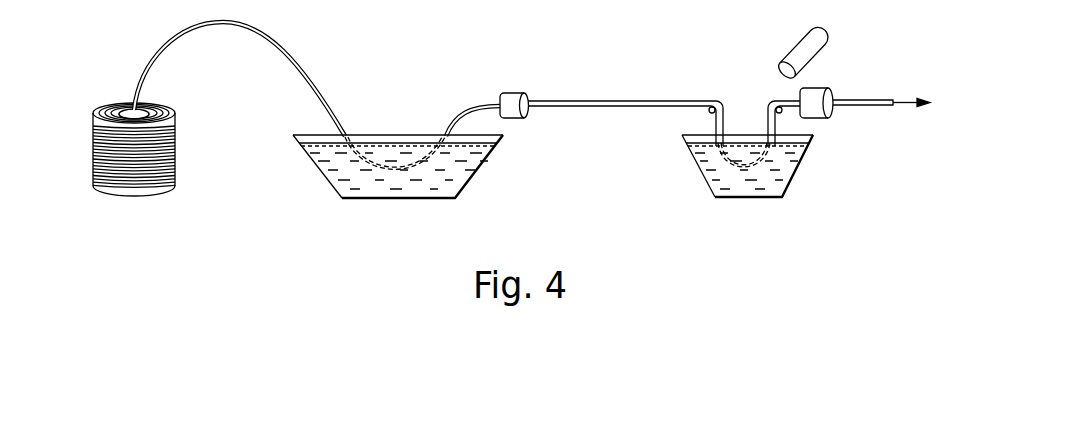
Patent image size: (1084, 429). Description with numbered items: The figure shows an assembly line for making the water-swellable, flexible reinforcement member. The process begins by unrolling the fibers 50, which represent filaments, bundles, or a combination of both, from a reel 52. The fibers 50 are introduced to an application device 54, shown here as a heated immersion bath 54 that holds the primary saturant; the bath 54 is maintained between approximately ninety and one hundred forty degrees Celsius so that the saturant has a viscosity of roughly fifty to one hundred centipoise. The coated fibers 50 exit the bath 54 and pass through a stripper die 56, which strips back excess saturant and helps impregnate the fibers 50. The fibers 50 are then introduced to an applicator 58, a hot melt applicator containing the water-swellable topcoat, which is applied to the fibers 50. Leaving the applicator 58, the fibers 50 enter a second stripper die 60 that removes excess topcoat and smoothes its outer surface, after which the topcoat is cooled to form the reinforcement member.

The fibers 50 is at (305, 70).
The reel 52 is at (176, 168).
The application device 54 is at (480, 155).
The stripper die 56 is at (510, 92).
The applicator 58 is at (797, 153).
The second stripper die 60 is at (826, 87).